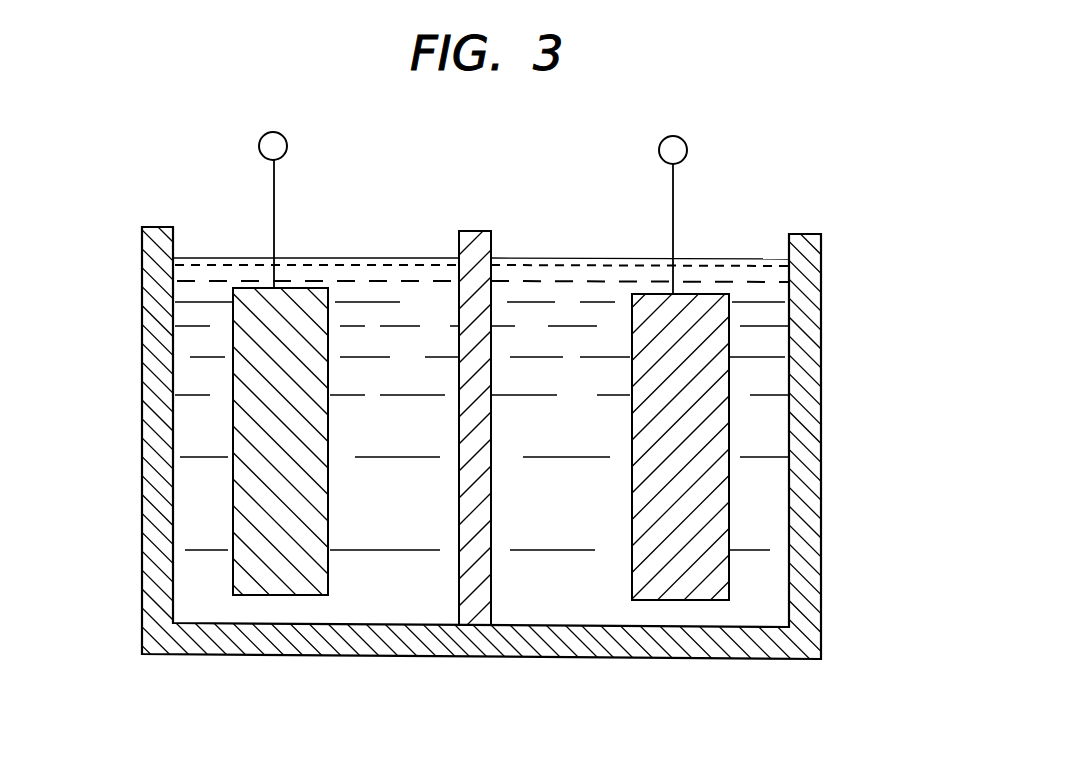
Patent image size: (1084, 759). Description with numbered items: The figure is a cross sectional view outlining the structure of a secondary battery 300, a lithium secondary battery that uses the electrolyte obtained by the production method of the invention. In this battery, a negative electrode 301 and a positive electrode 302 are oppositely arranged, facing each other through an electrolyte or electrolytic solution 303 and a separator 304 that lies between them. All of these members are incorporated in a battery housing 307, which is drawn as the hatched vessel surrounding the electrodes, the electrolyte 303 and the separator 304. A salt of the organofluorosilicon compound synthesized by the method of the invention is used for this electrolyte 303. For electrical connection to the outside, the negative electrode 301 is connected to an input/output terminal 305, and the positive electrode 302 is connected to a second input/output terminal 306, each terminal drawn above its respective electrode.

The secondary battery 300 is at (831, 376).
The negative electrode 301 is at (285, 581).
The positive electrode 302 is at (663, 585).
The electrolyte 303 is at (553, 540).
The separator 304 is at (471, 236).
The input/output terminal 305 is at (279, 134).
The input/output terminal 306 is at (679, 138).
The battery housing 307 is at (163, 638).